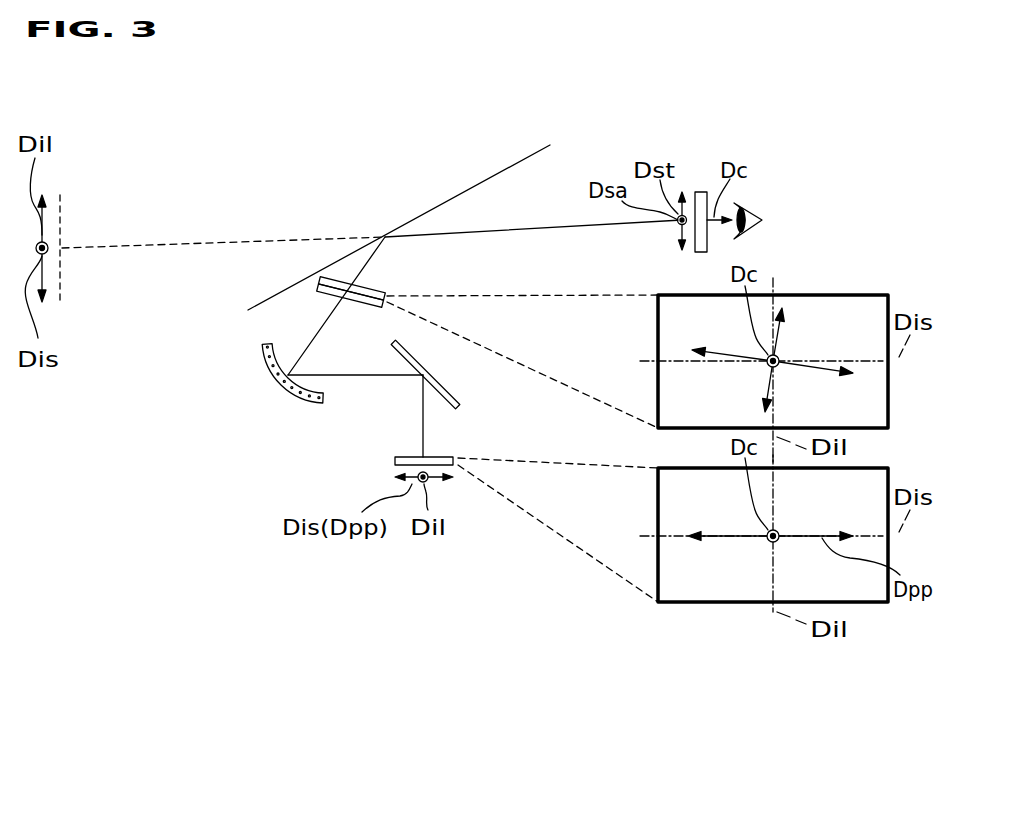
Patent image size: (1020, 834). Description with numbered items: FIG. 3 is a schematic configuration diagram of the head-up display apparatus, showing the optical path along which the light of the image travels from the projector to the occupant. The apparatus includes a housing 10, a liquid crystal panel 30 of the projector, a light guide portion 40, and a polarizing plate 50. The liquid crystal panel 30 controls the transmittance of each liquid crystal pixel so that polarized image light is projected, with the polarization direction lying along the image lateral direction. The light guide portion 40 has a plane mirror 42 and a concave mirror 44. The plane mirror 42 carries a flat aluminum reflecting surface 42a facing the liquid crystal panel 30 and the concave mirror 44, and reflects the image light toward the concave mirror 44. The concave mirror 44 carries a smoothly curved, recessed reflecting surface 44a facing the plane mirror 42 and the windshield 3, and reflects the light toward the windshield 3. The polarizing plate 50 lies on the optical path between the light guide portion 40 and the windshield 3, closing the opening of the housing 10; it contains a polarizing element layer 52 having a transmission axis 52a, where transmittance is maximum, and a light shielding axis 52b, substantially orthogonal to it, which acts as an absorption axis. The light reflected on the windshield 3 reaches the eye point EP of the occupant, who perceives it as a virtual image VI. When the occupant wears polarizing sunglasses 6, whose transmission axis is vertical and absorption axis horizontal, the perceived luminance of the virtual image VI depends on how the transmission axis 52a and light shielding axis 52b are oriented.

The windshield 3 is at (436, 208).
The polarizing sunglasses 6 is at (701, 192).
The housing 10 is at (370, 465).
The liquid crystal panel 30 is at (395, 461).
The light guide portion 40 is at (355, 395).
The plane mirror 42 is at (387, 396).
The reflecting surface 42a is at (455, 402).
The concave mirror 44 is at (256, 380).
The reflecting surface 44a is at (264, 344).
The polarizing plate 50 is at (277, 280).
The polarizing element layer 52 is at (318, 292).
The transmission axis 52a is at (828, 366).
The light shielding axis 52b is at (777, 342).
The eye point EP is at (762, 210).
The virtual image VI is at (63, 210).